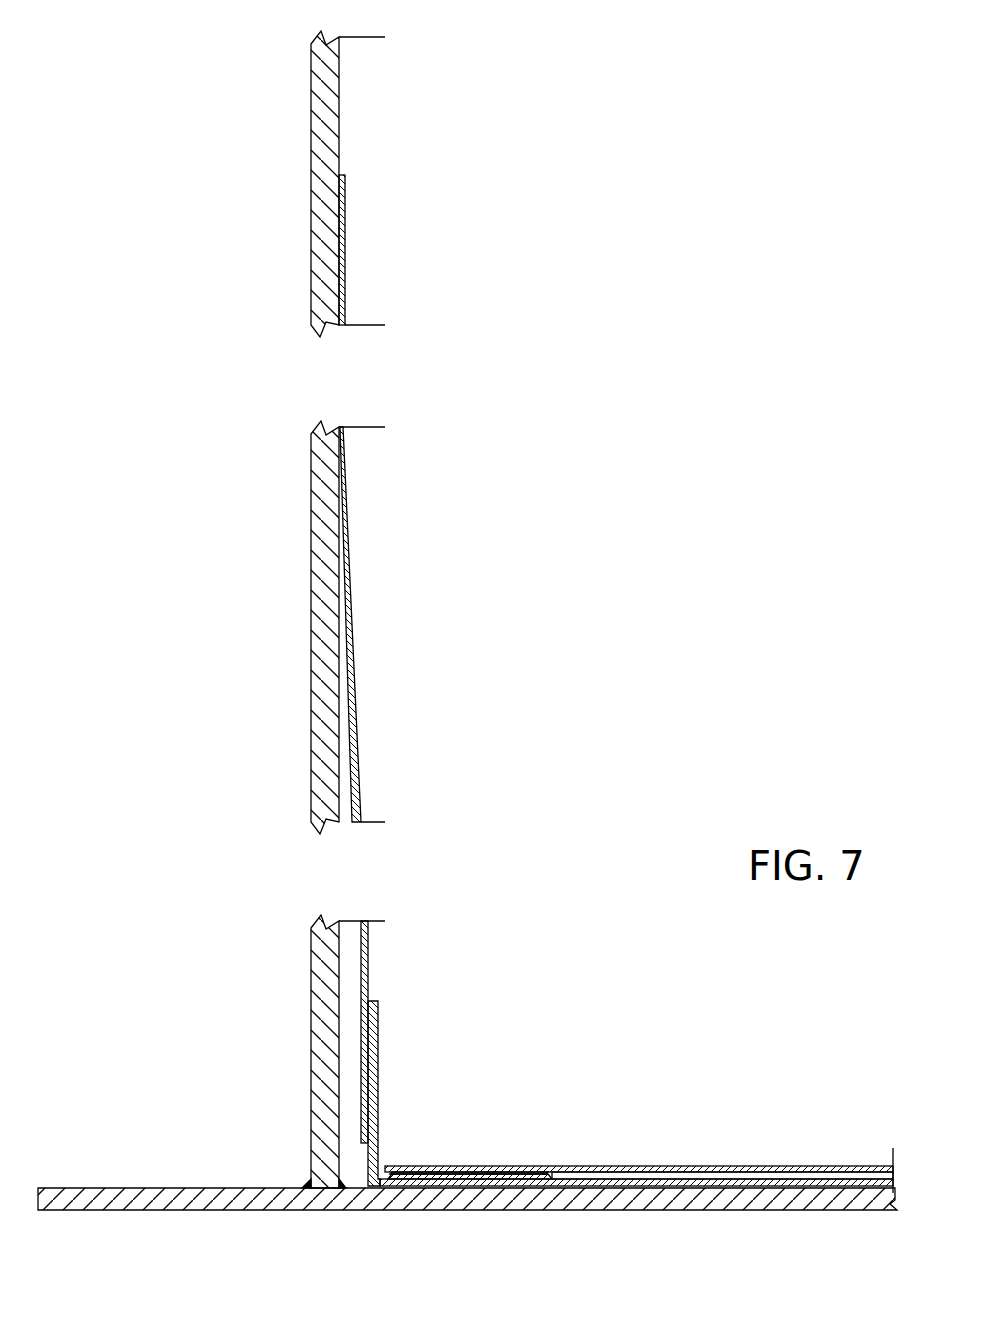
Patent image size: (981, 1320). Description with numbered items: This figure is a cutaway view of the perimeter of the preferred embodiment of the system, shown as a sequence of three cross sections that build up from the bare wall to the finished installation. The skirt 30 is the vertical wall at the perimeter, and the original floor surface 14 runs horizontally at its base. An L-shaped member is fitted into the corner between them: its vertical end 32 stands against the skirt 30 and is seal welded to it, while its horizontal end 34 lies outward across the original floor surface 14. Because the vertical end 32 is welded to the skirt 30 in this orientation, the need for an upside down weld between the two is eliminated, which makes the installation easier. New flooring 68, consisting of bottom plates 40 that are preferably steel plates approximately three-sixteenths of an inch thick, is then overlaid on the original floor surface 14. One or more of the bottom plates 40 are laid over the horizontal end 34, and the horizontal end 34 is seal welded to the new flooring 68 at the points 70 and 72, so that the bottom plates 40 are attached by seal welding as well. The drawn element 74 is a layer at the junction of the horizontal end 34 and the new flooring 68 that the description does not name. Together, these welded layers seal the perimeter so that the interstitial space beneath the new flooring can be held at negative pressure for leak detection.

The original floor surface 14 is at (660, 1200).
The skirt 30 is at (358, 771).
The vertical end 32 is at (373, 1040).
The horizontal end 34 is at (455, 1172).
The bottom plates 40 is at (730, 1166).
The new flooring 68 is at (635, 1184).
The seal weld point 70 is at (370, 1000).
The seal weld point 72 is at (555, 1178).
The lower membrane layer 74 is at (400, 1174).